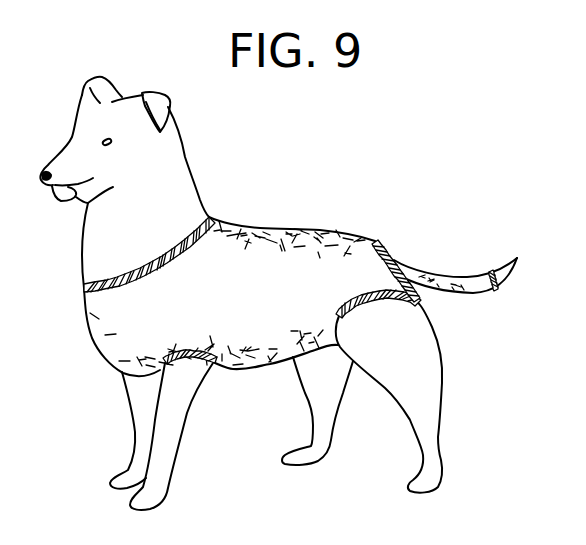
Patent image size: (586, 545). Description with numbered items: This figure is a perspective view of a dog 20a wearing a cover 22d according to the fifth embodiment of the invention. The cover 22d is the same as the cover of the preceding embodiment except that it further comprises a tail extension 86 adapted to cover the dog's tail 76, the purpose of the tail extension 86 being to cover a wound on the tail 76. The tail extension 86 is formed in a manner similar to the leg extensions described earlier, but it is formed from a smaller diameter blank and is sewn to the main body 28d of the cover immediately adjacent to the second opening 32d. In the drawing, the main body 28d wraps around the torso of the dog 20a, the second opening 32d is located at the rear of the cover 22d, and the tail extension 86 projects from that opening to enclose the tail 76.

The dog 20a is at (288, 229).
The cover 22d is at (297, 222).
The main body 28d is at (332, 255).
The second opening 32d is at (405, 258).
The tail extension 86 is at (465, 282).
The tail 76 is at (506, 262).